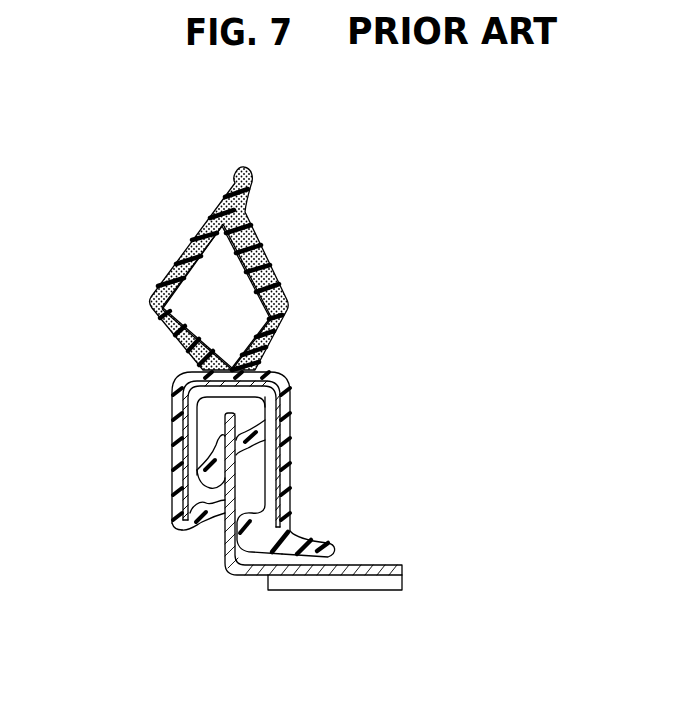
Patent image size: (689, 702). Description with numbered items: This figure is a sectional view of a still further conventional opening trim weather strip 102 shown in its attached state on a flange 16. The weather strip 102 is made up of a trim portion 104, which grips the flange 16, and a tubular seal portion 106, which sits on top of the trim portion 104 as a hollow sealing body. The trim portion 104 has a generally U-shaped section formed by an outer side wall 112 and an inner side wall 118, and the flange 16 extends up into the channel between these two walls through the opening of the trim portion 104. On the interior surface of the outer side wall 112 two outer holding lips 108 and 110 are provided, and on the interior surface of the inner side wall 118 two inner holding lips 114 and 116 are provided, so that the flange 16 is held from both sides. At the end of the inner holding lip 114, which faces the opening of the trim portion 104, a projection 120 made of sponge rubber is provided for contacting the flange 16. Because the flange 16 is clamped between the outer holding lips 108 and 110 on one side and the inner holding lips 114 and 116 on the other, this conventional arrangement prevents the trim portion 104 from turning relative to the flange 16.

The opening trim weather strip 102 is at (297, 297).
The trim portion 104 is at (278, 385).
The tubular seal portion 106 is at (176, 262).
The outer holding lip 108 is at (224, 494).
The outer holding lip 110 is at (218, 441).
The outer side wall 112 is at (172, 459).
The inner holding lip 114 is at (253, 543).
The inner holding lip 116 is at (250, 432).
The inner side wall 118 is at (292, 457).
The projection 120 is at (230, 547).
The flange 16 is at (223, 528).